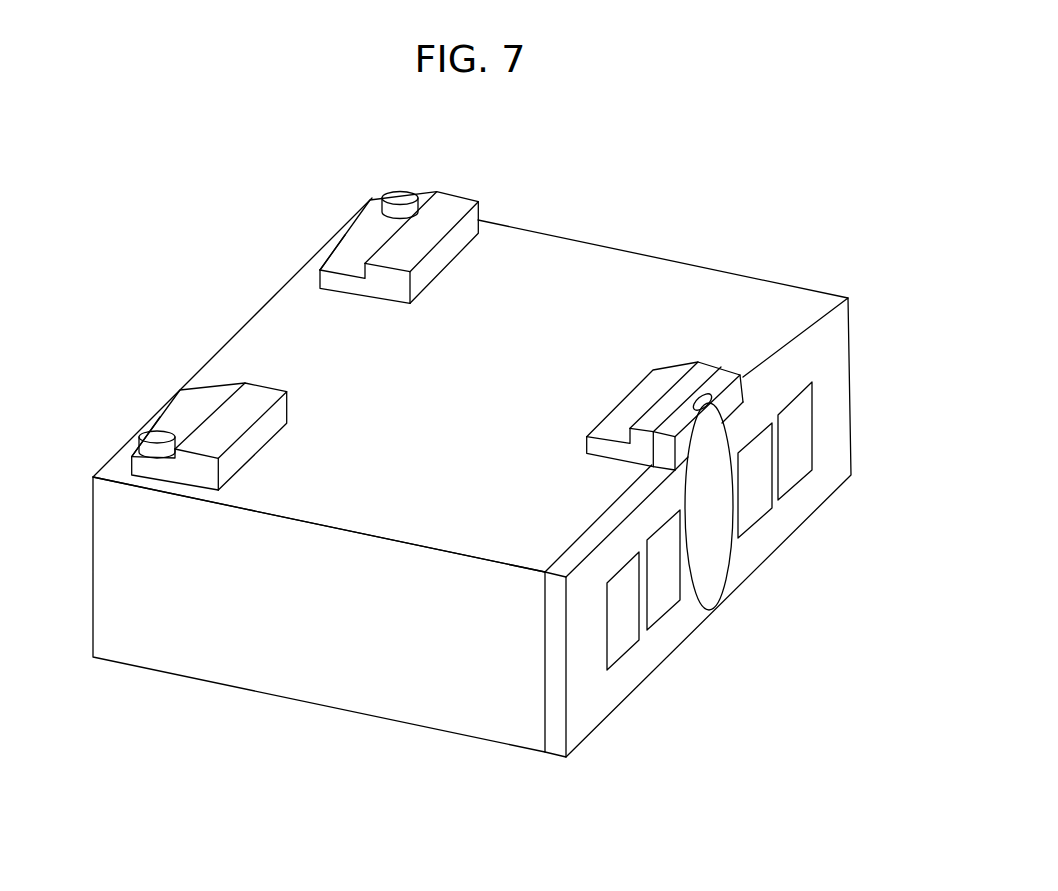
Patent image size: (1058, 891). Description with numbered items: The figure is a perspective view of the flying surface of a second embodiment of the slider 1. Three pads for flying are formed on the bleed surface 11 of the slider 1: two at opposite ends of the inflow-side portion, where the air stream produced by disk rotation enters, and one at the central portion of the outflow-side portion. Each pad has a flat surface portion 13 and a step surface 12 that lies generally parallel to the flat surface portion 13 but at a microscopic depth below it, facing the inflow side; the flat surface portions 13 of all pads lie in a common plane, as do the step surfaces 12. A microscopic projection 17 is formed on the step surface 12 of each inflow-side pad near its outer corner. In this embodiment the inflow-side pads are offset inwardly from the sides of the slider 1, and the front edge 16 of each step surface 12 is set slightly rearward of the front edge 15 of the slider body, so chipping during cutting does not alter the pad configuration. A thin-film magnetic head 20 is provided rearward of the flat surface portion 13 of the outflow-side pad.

The slider 1 is at (472, 498).
The bleed surface 11 is at (675, 262).
The step surface 12 is at (366, 231).
The flat surface portion 13 is at (453, 205).
The front edge of the body of the slider 15 is at (250, 320).
The front edge of the step surface 16 is at (335, 245).
The microscopic projection 17 is at (402, 196).
The thin-film magnetic head 20 is at (748, 618).